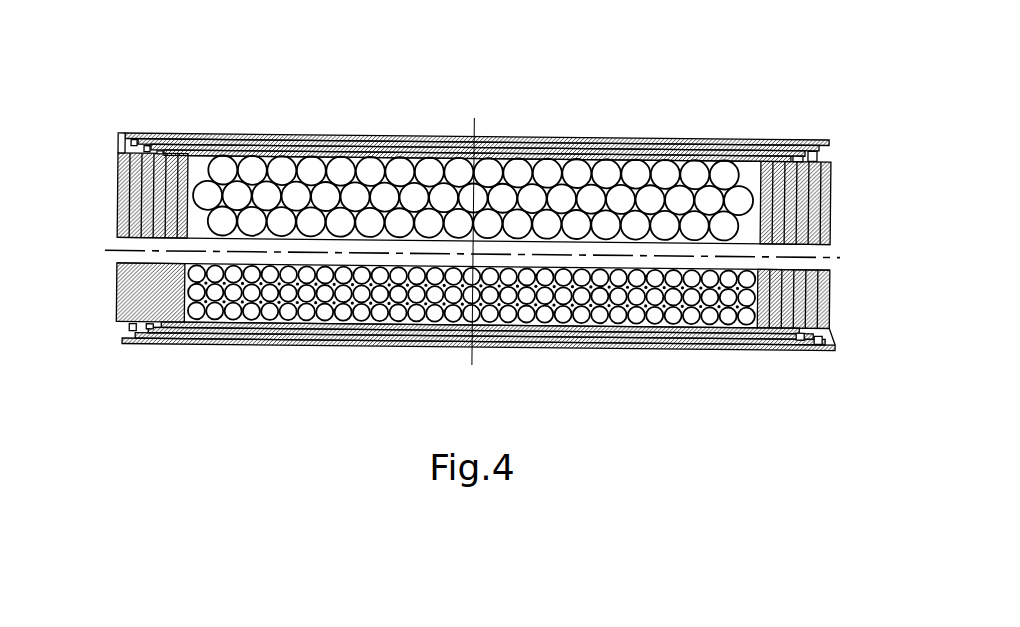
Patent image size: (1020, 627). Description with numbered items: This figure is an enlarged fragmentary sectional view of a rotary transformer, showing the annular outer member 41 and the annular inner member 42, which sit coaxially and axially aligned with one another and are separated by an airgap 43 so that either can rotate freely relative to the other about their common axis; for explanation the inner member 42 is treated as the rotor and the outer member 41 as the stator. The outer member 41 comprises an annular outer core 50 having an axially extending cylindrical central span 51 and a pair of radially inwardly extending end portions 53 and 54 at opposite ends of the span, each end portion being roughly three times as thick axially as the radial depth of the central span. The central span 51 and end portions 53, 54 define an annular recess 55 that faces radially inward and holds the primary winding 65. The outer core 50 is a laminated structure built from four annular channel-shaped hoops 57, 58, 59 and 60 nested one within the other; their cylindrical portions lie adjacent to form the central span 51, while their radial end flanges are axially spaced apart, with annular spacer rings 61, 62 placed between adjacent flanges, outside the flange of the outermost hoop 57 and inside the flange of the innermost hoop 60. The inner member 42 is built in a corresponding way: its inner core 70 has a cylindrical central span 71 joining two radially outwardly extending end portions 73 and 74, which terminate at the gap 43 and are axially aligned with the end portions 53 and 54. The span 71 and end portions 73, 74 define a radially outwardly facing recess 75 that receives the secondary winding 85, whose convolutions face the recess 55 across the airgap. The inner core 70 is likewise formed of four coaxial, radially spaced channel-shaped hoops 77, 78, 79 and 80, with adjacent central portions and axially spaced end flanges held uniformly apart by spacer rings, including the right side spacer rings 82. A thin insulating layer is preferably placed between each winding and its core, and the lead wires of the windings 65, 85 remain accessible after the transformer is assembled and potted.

The annular outer member 41 is at (598, 106).
The annular inner member 42 is at (316, 390).
The airgap 43 is at (118, 254).
The annular outer core 50 is at (378, 132).
The cylindrical central span 51 is at (414, 136).
The radially inwardly extending end portion 53 is at (115, 155).
The radially inwardly extending end portion 54 is at (850, 165).
The annular recess 55 is at (690, 165).
The hoop 57 is at (230, 150).
The hoop 58 is at (152, 147).
The hoop 59 is at (138, 142).
The hoop 60 is at (124, 136).
The annular spacer rings 61 is at (117, 206).
The annular spacer rings 62 is at (830, 224).
The primary winding 65 is at (548, 170).
The inner core 70 is at (616, 346).
The cylindrical central span 71 is at (522, 346).
The radially outwardly extending end portion 73 is at (117, 290).
The radially outwardly extending end portion 74 is at (843, 302).
The radially outwardly facing recess 75 is at (255, 316).
The hoop 77 is at (745, 302).
The hoop 78 is at (797, 343).
The hoop 79 is at (806, 335).
The hoop 80 is at (826, 338).
The right side spacer rings 82 is at (828, 291).
The secondary winding 85 is at (383, 314).